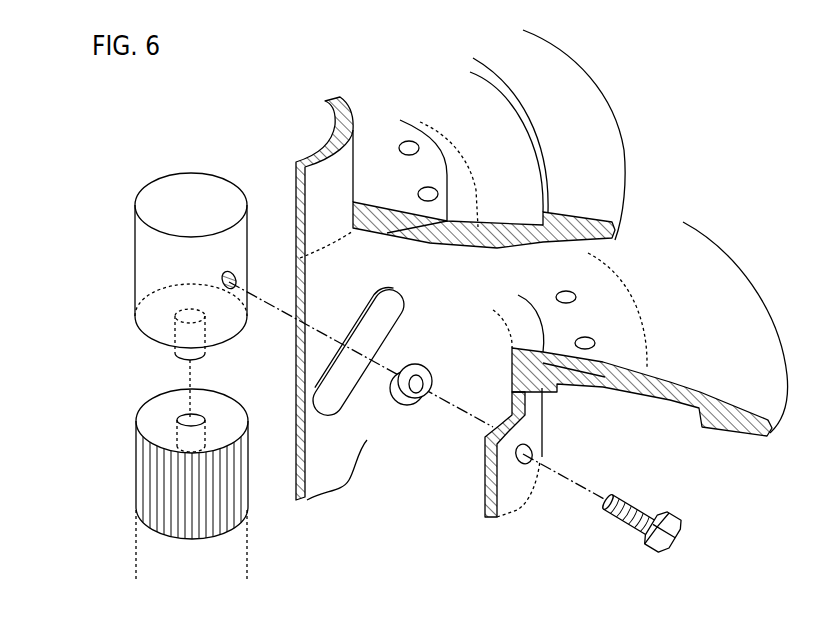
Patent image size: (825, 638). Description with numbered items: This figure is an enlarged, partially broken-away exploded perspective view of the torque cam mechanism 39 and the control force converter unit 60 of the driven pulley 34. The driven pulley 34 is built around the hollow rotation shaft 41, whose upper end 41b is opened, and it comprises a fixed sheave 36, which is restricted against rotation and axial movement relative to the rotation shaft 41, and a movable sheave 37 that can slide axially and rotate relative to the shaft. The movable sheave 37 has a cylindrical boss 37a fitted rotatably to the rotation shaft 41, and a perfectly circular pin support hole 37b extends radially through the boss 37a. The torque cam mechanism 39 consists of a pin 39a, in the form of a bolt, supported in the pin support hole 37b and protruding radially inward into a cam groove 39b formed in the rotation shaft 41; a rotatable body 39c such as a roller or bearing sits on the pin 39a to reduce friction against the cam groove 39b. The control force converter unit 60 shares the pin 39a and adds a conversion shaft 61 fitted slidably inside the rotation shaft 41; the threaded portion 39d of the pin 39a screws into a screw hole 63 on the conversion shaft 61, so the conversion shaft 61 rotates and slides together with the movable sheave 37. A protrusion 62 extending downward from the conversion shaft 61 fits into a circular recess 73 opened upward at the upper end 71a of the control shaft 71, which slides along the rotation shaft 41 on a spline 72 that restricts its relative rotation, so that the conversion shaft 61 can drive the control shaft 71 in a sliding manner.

The driven pulley 34 is at (733, 84).
The fixed sheave 36 is at (610, 155).
The movable sheave 37 is at (690, 260).
The cylindrical boss 37a is at (544, 426).
The pin support hole 37b is at (526, 466).
The torque cam mechanism 39 is at (563, 582).
The pin 39a is at (633, 525).
The cam groove 39b is at (358, 398).
The rotatable body 39c is at (436, 383).
The threaded portion 39d is at (628, 500).
The rotation shaft 41 is at (345, 100).
The upper end 41b is at (355, 158).
The control force converter unit 60 is at (125, 185).
The conversion shaft 61 is at (140, 263).
The protrusion 62 is at (176, 355).
The screw hole 63 is at (238, 279).
The control shaft 71 is at (137, 521).
The upper end 71a is at (150, 558).
The spline 72 is at (136, 470).
The recess 73 is at (188, 416).